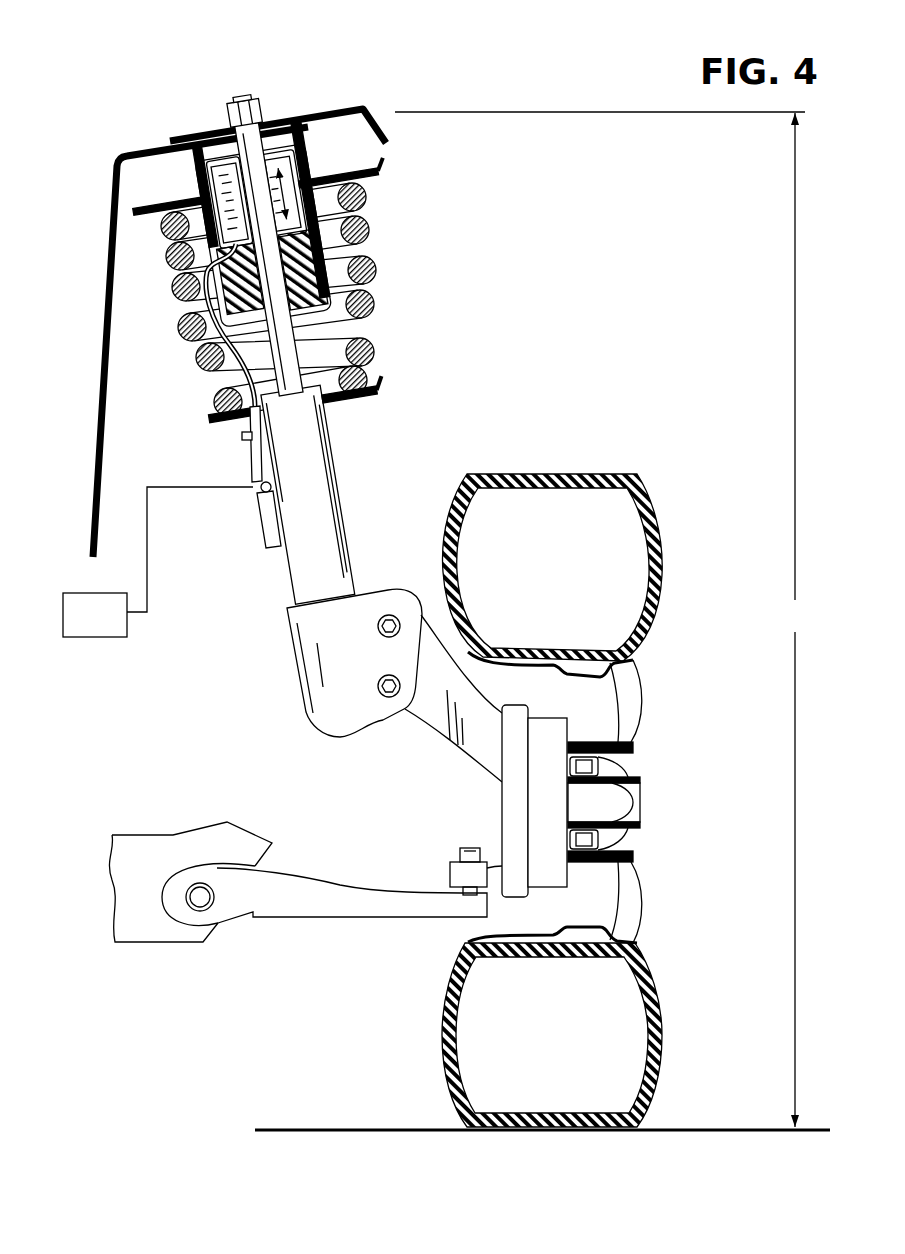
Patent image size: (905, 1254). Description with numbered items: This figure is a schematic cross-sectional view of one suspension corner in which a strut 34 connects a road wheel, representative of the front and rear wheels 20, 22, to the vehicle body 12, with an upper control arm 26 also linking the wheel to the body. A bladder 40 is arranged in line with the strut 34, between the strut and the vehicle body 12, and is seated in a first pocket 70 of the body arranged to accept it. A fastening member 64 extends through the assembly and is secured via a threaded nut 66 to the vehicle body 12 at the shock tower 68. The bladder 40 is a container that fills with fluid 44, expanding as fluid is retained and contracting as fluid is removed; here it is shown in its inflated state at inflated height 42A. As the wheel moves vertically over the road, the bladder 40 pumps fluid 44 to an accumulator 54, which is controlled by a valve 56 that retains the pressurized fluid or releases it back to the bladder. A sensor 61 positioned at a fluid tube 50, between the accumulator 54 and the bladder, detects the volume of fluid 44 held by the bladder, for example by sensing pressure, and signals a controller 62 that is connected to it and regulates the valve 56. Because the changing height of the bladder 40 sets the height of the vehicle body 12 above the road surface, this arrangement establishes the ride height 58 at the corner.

The vehicle body 12 is at (114, 180).
The fastening member 64 is at (237, 98).
The threaded nut 66 is at (270, 104).
The first pocket 70 is at (295, 156).
The shock tower 68 is at (344, 149).
The bladder 40 is at (210, 170).
The fluid 44 is at (229, 202).
The inflated height 42A is at (308, 209).
The strut 34 is at (370, 418).
The sensor 61 is at (242, 436).
The fluid tube 50 is at (253, 450).
The valve 56 is at (272, 487).
The accumulator 54 is at (273, 513).
The controller 62 is at (108, 632).
The upper control arm 26 is at (362, 900).
The ride height 58 is at (601, 619).
The front wheels 20 is at (615, 800).
The rear wheels 22 is at (657, 1025).